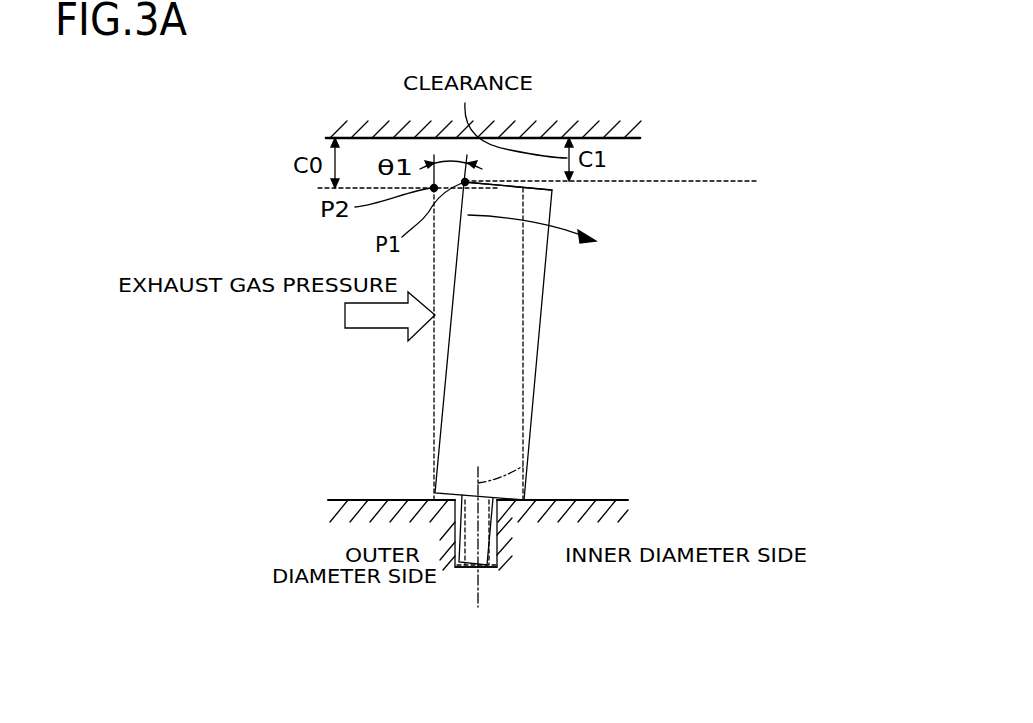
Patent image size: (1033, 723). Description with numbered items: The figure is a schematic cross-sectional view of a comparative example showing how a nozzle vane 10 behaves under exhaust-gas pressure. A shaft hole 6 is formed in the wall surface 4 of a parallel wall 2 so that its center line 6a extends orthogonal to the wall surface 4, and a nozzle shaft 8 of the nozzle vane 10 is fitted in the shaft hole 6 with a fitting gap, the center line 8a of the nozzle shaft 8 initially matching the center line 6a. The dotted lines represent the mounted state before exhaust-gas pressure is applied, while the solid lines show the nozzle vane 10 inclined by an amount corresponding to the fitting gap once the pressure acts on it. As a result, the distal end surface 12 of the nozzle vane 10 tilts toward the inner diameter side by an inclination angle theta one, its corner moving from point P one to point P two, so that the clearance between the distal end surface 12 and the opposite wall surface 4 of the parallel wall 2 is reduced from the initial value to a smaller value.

The parallel wall 2 is at (607, 128).
The wall surface 4 is at (622, 141).
The shaft hole 6 is at (482, 567).
The center line of the shaft hole 6a is at (468, 573).
The nozzle shaft 8 is at (490, 525).
The center line of the nozzle shaft 8a is at (527, 465).
The nozzle vane 10 is at (542, 315).
The distal end surface 12 is at (538, 192).